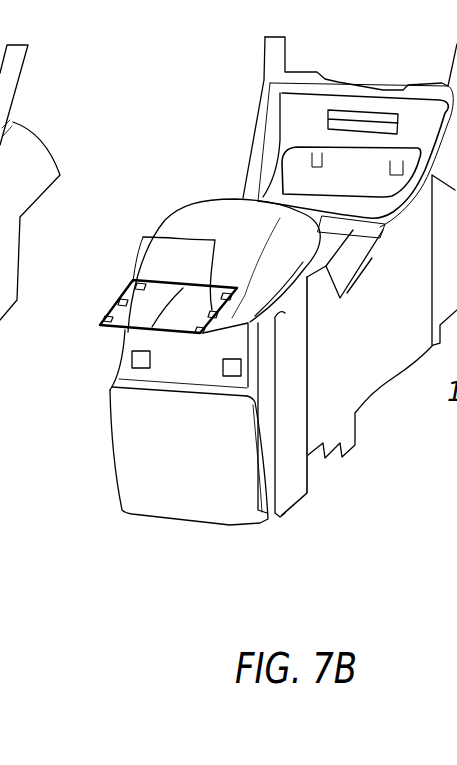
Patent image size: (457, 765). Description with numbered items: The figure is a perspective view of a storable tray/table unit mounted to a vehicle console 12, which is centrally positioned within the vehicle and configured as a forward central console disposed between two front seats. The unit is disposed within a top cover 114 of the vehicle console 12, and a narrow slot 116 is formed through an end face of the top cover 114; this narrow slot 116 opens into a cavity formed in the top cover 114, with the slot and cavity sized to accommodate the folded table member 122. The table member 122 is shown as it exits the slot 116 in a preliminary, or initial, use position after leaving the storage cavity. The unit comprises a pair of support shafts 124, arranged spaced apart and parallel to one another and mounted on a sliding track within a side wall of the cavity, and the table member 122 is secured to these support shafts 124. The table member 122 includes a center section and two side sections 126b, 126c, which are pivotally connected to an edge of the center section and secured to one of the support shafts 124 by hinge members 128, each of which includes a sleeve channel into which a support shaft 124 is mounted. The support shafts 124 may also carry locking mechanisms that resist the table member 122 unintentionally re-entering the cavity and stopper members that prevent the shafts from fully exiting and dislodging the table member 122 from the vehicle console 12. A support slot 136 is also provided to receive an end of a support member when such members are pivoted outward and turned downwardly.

The vehicle console 12 is at (386, 334).
The top cover 114 is at (192, 201).
The narrow slot 116 is at (143, 237).
The table member 122 is at (109, 330).
The support shafts 124 is at (206, 335).
The side section 126b is at (130, 287).
The side section 126c is at (207, 292).
The hinge members 128 is at (107, 317).
The support slot 136 is at (132, 362).